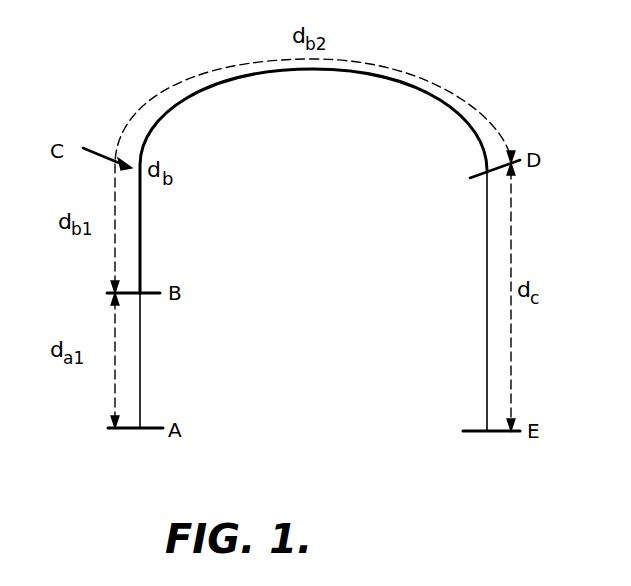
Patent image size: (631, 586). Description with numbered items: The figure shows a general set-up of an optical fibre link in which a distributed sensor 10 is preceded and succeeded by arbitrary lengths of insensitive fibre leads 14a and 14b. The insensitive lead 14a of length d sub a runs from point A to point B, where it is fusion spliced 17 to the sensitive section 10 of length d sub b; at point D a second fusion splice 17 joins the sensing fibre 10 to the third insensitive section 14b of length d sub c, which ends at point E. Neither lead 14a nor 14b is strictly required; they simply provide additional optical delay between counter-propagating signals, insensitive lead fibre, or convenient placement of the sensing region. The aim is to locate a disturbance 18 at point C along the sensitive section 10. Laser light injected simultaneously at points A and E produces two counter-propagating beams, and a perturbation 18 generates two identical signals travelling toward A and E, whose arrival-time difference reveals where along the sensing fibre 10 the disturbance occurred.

The distributed sensor 10 is at (330, 70).
The insensitive fibre lead 14a is at (140, 368).
The insensitive fibre lead 14b is at (487, 341).
The fusion splice 17 is at (140, 293).
The disturbance 18 is at (90, 146).